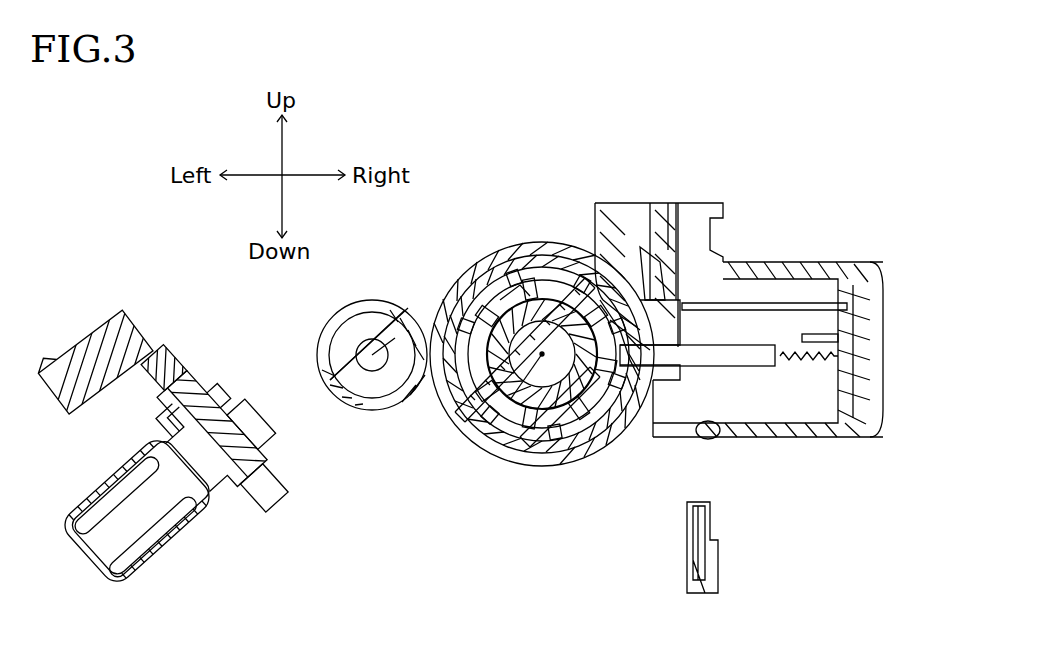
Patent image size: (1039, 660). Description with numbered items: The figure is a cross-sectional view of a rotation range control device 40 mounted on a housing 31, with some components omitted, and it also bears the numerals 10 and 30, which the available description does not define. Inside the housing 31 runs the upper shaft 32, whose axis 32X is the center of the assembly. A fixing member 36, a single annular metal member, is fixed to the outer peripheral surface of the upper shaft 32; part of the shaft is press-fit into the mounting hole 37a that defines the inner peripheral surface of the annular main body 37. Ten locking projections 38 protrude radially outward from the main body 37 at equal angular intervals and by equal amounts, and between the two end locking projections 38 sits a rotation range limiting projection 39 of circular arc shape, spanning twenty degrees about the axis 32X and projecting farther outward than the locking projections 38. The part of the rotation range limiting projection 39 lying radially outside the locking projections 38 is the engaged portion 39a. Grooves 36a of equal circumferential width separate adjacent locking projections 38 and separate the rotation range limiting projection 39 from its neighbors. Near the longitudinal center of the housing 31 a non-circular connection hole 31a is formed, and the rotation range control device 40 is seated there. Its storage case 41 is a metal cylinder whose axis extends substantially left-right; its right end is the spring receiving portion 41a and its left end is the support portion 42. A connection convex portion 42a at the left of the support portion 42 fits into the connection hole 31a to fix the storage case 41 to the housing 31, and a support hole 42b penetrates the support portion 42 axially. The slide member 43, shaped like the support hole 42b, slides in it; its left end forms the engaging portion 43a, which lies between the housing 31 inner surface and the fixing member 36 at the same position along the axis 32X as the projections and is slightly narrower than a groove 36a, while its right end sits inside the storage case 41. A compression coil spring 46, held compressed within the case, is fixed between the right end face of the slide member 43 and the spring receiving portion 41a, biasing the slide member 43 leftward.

The connector member 10 is at (376, 552).
The rotary operating mechanism 30 is at (502, 381).
The housing 31 is at (578, 458).
The connection hole 31a is at (660, 437).
The upper shaft 32 is at (522, 381).
The axis 32X is at (487, 447).
The fixing member 36 is at (497, 453).
The grooves 36a is at (475, 300).
The main body 37 is at (550, 277).
The mounting hole 37a is at (520, 277).
The locking projections 38 is at (517, 273).
The rotation range limiting projection 39 is at (382, 337).
The engaged portion 39a is at (376, 327).
The rotation range control device 40 is at (770, 362).
The storage case 41 is at (799, 326).
The spring receiving portion 41a is at (881, 355).
The support portion 42 is at (684, 314).
The connection convex portion 42a is at (625, 420).
The support hole 42b is at (676, 203).
The slide member 43 is at (711, 279).
The engaging portion 43a is at (652, 262).
The compression coil spring 46 is at (785, 353).